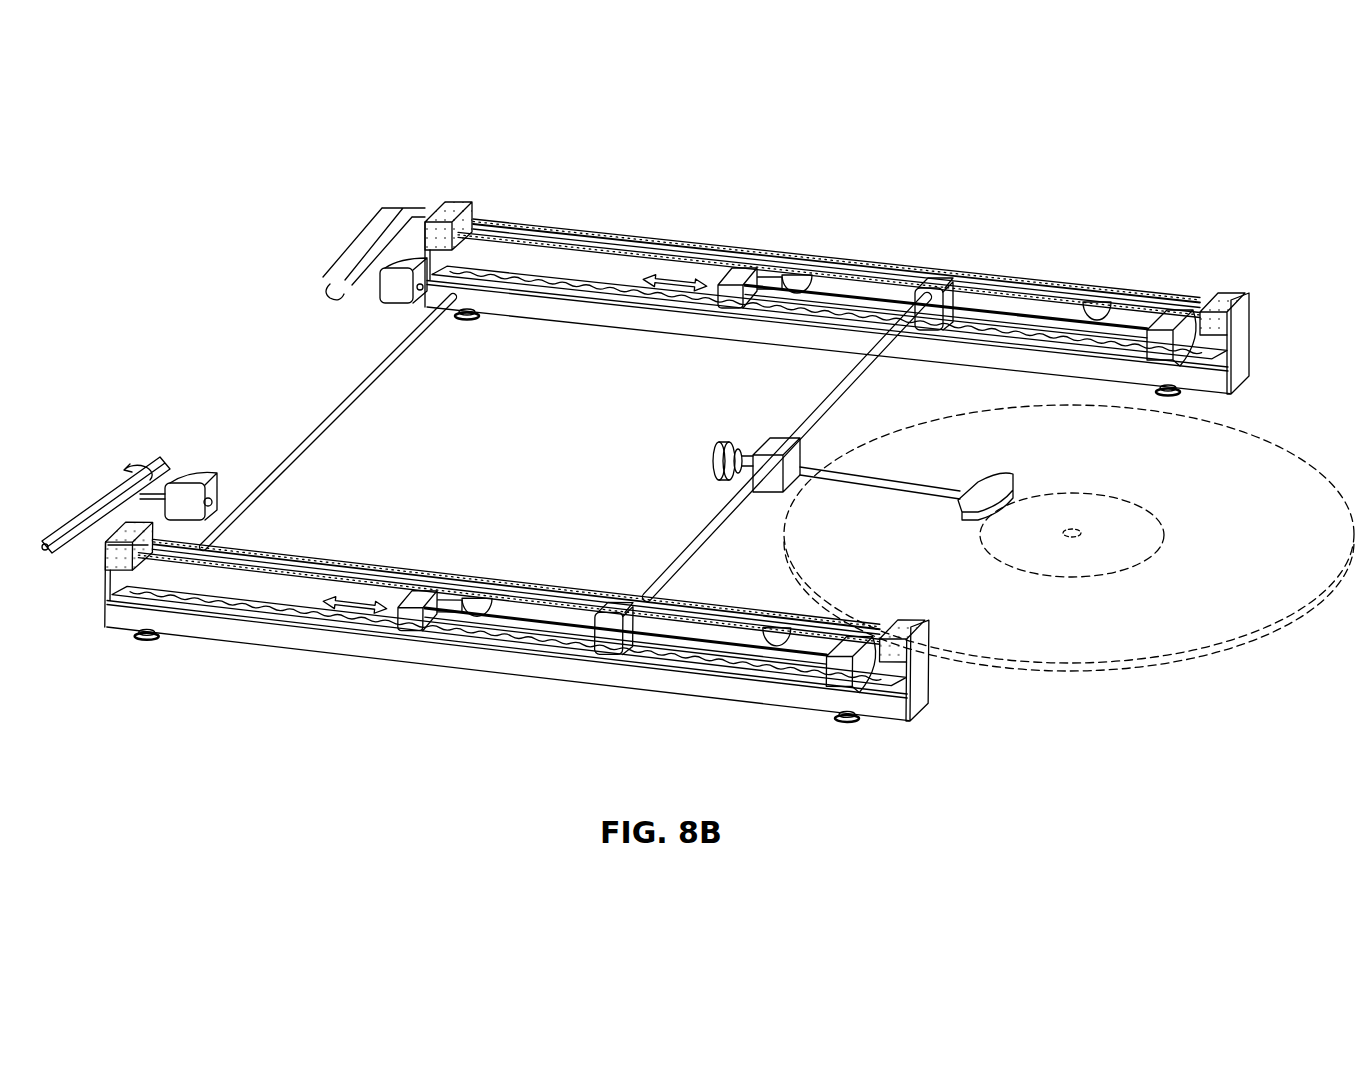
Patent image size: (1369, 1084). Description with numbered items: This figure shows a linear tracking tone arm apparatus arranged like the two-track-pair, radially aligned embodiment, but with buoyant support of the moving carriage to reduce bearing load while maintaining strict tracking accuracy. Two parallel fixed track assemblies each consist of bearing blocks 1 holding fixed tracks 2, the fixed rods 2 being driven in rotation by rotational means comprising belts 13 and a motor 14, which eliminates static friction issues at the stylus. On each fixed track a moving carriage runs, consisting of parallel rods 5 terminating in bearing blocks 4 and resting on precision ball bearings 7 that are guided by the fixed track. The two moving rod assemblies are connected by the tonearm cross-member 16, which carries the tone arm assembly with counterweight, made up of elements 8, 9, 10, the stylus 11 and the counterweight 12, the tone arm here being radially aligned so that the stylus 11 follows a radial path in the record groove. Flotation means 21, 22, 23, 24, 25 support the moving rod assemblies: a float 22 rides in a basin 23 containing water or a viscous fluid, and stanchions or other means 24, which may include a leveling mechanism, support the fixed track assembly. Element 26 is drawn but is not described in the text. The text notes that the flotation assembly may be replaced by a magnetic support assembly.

The bearing block 1 is at (468, 210).
The fixed track 2 is at (533, 225).
The bearing block 4 is at (740, 275).
The parallel rod 5 is at (695, 637).
The precision ball bearing 7 is at (800, 280).
The tone arm assembly 8 is at (781, 442).
The tone arm assembly 9 is at (890, 480).
The tone arm assembly 10 is at (973, 513).
The stylus 11 is at (1000, 513).
The counterweight 12 is at (722, 452).
The belt 13 is at (397, 232).
The motor 14 is at (388, 288).
The tonearm cross-member 16 is at (697, 537).
The flotation means 21 is at (465, 320).
The float 22 is at (490, 633).
The basin 23 is at (707, 327).
The stanchion 24 is at (1245, 335).
The flotation means 25 is at (557, 288).
The wire 26 is at (355, 400).